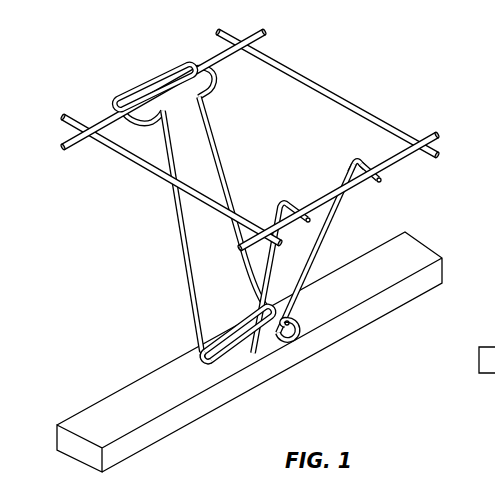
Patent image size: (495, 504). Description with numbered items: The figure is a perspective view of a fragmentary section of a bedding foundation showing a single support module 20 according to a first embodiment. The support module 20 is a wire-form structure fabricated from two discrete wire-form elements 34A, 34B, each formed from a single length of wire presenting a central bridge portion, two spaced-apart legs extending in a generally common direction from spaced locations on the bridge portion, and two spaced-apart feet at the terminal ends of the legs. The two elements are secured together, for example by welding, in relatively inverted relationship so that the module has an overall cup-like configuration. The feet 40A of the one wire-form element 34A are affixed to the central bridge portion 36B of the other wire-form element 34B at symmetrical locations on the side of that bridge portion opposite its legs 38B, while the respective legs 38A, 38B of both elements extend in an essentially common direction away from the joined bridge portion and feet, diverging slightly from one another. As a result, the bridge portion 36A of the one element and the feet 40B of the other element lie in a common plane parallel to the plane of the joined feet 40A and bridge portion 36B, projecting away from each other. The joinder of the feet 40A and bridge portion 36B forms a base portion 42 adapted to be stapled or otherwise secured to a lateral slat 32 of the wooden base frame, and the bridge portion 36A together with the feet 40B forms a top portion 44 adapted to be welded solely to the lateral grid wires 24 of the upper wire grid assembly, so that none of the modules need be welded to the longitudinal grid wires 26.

The support module 20 is at (266, 252).
The lateral grid wires 24 is at (408, 158).
The longitudinal grid wires 26 is at (321, 88).
The lateral slat 32 is at (148, 413).
The wire-form element 34A is at (179, 283).
The wire-form element 34B is at (335, 230).
The central bridge portion 36A is at (142, 86).
The central bridge portion 36B is at (234, 323).
The legs 38A is at (269, 231).
The legs 38B is at (273, 287).
The feet 40A is at (275, 337).
The feet 40B is at (380, 185).
The base portion 42 is at (223, 380).
The top portion 44 is at (355, 146).